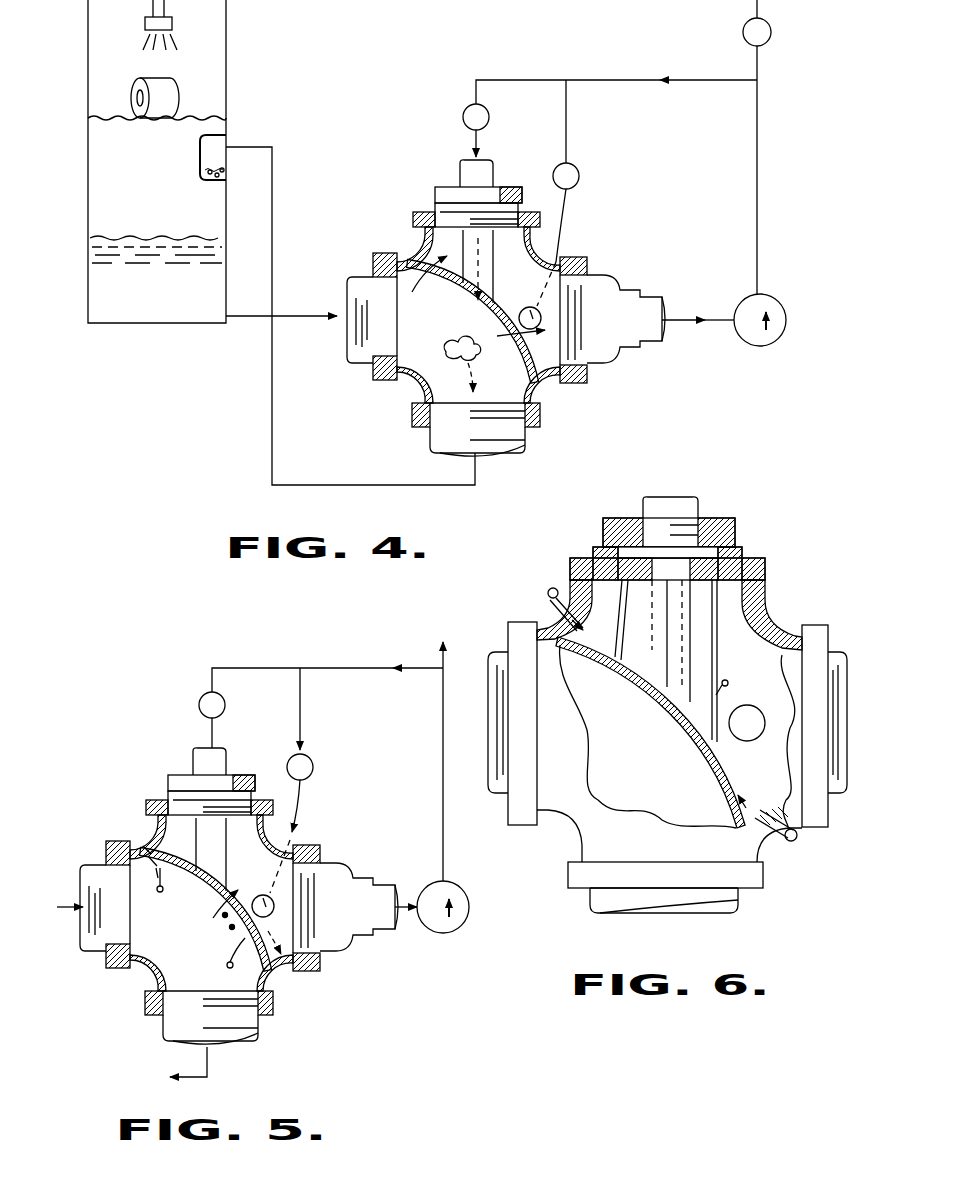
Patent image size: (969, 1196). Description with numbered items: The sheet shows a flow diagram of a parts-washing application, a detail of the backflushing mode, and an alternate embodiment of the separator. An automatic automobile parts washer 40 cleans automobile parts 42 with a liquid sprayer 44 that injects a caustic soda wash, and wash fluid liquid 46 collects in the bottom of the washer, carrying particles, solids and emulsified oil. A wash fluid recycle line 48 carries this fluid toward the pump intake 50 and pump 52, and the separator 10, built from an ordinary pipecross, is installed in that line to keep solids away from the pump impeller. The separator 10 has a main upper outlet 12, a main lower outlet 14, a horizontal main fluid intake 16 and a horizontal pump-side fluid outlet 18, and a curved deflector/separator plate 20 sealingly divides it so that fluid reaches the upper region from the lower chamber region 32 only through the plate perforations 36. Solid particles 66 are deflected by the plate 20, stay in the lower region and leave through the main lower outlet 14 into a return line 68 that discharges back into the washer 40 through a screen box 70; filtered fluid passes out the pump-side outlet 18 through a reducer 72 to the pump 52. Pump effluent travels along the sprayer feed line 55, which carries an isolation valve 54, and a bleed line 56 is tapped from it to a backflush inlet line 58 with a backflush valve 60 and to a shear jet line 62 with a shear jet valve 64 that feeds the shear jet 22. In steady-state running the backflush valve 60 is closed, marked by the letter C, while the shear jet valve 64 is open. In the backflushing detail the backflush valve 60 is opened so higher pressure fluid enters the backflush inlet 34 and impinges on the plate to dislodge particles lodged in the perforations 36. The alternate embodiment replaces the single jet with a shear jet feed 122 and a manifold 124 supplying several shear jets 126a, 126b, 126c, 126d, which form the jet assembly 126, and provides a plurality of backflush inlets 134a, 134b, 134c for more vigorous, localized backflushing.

In FIG. 4, the separator 10 is at (600, 216).
In FIG. 5, the separator 10 is at (132, 829).
In FIG. 6, the separator 10 is at (578, 547).
In FIG. 4, the main upper outlet 12 is at (505, 238).
In FIG. 4, the main lower outlet 14 is at (488, 426).
In FIG. 4, the horizontal main fluid intake 16 is at (378, 330).
In FIG. 4, the horizontal pump-side fluid outlet 18 is at (577, 335).
In FIG. 4, the deflector/separator plate 20 is at (462, 284).
In FIG. 4, the shear jet 22 is at (467, 243).
In FIG. 4, the lower chamber region 32 is at (427, 317).
In FIG. 4, the backflush inlet 34 is at (576, 262).
In FIG. 4, the plate perforations 36 is at (527, 308).
In FIG. 4, the automatic automobile parts washer 40 is at (82, 60).
In FIG. 4, the automobile parts 42 is at (178, 92).
In FIG. 4, the liquid sprayer 44 is at (173, 25).
In FIG. 4, the wash fluid liquid 46 is at (162, 294).
In FIG. 4, the wash fluid recycle line 48 is at (247, 320).
In FIG. 4, the pump intake 50 is at (690, 318).
In FIG. 5, the pump intake 50 is at (396, 916).
In FIG. 4, the pump 52 is at (780, 305).
In FIG. 5, the pump 52 is at (457, 928).
In FIG. 4, the isolation valve 54 is at (771, 33).
In FIG. 4, the sprayer feed line 55 is at (758, 120).
In FIG. 4, the bleed line 56 is at (690, 80).
In FIG. 4, the backflush inlet line 58 is at (568, 120).
In FIG. 5, the backflush inlet line 58 is at (302, 716).
In FIG. 4, the backflush valve 60 is at (580, 170).
In FIG. 5, the backflush valve 60 is at (313, 765).
In FIG. 4, the shear jet line 62 is at (528, 80).
In FIG. 5, the shear jet line 62 is at (210, 668).
In FIG. 4, the shear jet valve 64 is at (490, 117).
In FIG. 5, the shear jet valve 64 is at (226, 704).
In FIG. 4, the solid particles 66 is at (461, 364).
In FIG. 4, the return line 68 is at (370, 485).
In FIG. 4, the screen box 70 is at (200, 152).
In FIG. 4, the reducer 72 is at (621, 288).
In FIG. 5, the reducer 72 is at (340, 880).
In FIG. 6, the shear jet feed 122 is at (690, 497).
In FIG. 6, the manifold 124 is at (722, 547).
In FIG. 6, the disc 126 is at (650, 732).
In FIG. 6, the shear jet 126a is at (613, 662).
In FIG. 6, the shear jet 126b is at (658, 690).
In FIG. 6, the shear jet 126c is at (669, 712).
In FIG. 6, the shear jet 126d is at (718, 752).
In FIG. 6, the backflush inlet 134a is at (797, 843).
In FIG. 6, the backflush inlet 134b is at (550, 590).
In FIG. 6, the backflush inlet 134c is at (763, 718).